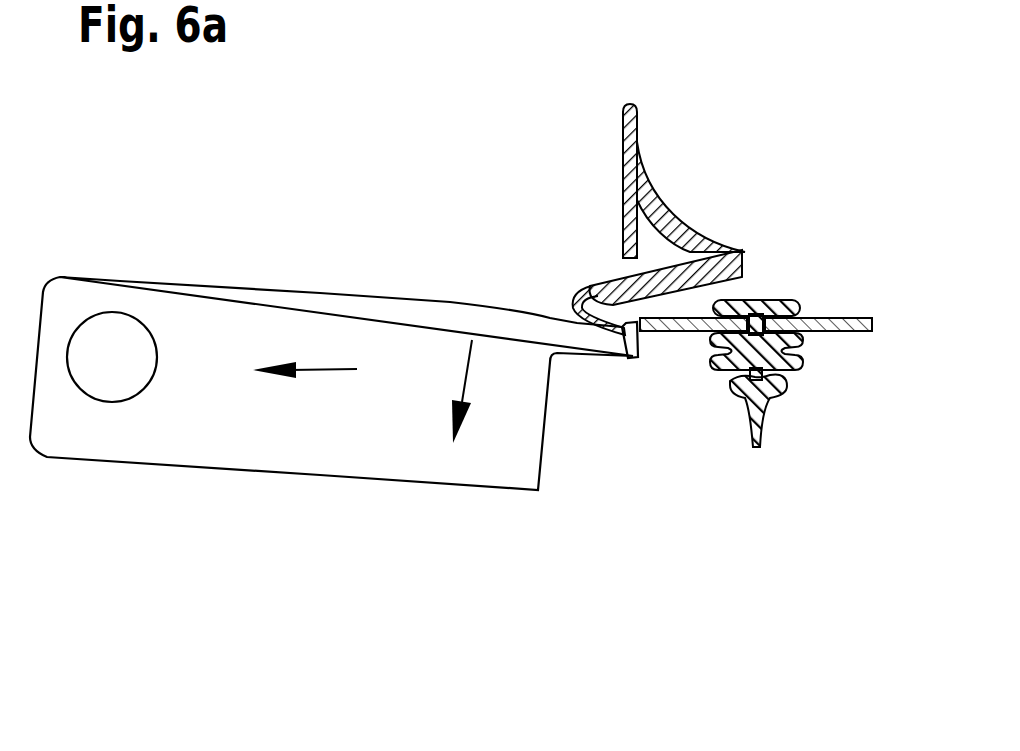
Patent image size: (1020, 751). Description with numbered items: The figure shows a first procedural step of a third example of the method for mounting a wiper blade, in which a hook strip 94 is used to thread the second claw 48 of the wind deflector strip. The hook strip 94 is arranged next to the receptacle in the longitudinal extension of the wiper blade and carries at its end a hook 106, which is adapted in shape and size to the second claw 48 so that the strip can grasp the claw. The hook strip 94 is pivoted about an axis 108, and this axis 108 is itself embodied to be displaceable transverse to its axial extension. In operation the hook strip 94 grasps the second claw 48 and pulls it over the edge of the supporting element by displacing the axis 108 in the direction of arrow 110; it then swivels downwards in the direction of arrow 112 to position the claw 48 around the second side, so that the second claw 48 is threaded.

The second claw 48 is at (575, 300).
The hook strip 94 is at (220, 337).
The hook 106 is at (627, 358).
The axis 108 is at (113, 355).
The arrow 110 is at (322, 368).
The arrow 112 is at (463, 370).